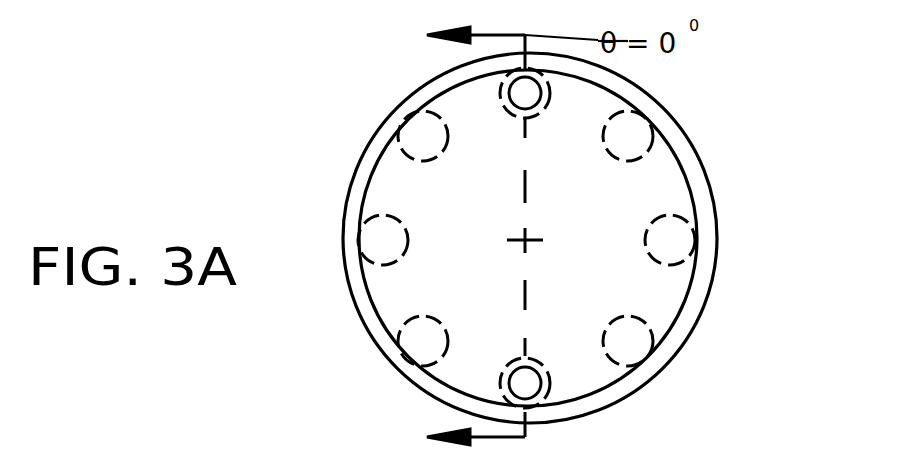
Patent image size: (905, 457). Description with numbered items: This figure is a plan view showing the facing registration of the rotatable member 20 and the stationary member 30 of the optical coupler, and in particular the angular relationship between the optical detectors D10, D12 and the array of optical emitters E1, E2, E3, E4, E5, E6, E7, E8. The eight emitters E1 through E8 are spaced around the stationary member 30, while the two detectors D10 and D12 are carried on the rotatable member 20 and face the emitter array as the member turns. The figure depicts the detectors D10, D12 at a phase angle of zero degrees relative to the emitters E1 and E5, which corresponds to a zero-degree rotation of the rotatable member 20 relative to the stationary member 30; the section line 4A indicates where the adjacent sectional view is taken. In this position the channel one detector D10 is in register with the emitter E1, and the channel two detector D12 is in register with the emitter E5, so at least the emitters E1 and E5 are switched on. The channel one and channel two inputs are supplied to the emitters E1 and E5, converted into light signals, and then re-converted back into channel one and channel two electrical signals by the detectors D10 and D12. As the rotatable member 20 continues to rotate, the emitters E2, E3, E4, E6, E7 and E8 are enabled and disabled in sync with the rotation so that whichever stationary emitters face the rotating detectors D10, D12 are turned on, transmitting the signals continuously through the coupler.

The stationary member 30 is at (687, 133).
The rotatable member 20 is at (690, 170).
The section line 4A- 4A is at (452, 237).
The optical emitter E1 is at (545, 93).
The optical emitter E2 is at (628, 136).
The optical emitter E3 is at (670, 240).
The optical emitter E4 is at (628, 341).
The optical emitter E5 is at (506, 383).
The optical emitter E6 is at (423, 341).
The optical emitter E7 is at (383, 240).
The optical emitter E8 is at (423, 136).
The optical detector D10 is at (515, 108).
The optical detector D12 is at (545, 372).